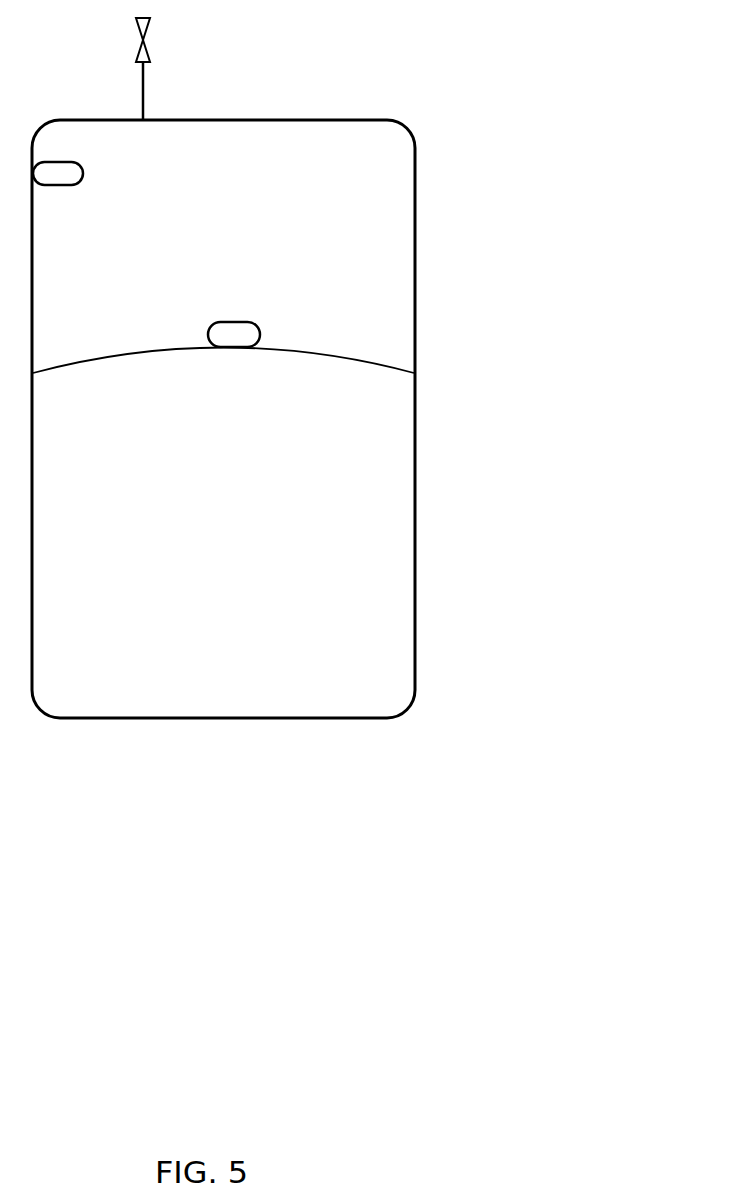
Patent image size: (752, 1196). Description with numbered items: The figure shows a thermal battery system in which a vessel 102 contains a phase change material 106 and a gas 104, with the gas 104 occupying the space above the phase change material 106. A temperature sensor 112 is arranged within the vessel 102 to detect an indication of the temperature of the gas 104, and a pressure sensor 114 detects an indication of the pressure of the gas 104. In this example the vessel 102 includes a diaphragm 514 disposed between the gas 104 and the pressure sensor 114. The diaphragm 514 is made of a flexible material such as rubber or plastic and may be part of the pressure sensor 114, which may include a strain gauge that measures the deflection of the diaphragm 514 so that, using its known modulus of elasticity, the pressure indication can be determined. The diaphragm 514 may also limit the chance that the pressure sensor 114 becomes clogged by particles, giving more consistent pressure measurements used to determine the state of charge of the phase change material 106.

The vessel 102 is at (416, 286).
The gas 104 is at (355, 218).
The phase change material 106 is at (352, 555).
The temperature sensor 112 is at (85, 174).
The pressure sensor 114 is at (220, 320).
The diaphragm 514 is at (173, 348).